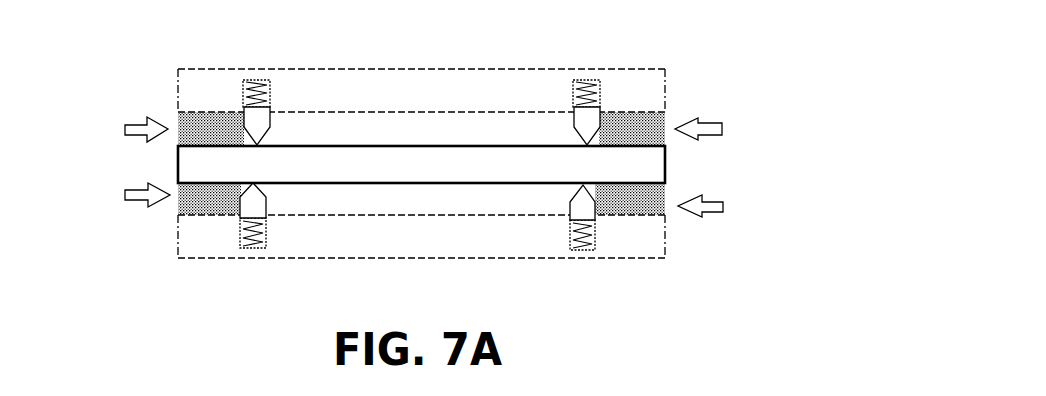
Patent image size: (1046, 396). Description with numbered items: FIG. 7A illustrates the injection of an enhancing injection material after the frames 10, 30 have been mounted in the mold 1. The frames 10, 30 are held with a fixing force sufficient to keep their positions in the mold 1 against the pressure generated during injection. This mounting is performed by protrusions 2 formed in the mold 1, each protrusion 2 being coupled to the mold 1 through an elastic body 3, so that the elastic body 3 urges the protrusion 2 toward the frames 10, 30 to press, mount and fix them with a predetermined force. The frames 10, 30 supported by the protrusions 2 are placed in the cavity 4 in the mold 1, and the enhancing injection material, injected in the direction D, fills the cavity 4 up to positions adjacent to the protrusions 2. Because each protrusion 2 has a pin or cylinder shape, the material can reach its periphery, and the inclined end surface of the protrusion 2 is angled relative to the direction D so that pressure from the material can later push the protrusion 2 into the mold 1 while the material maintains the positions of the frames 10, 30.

The mold 1 is at (638, 247).
The protrusion 2 is at (593, 110).
The elastic body 3 is at (258, 80).
The cavity 4 is at (404, 127).
The frame 10 is at (529, 164).
The frame 30 is at (665, 165).
The direction of injecting the enhancing injection material D is at (140, 127).